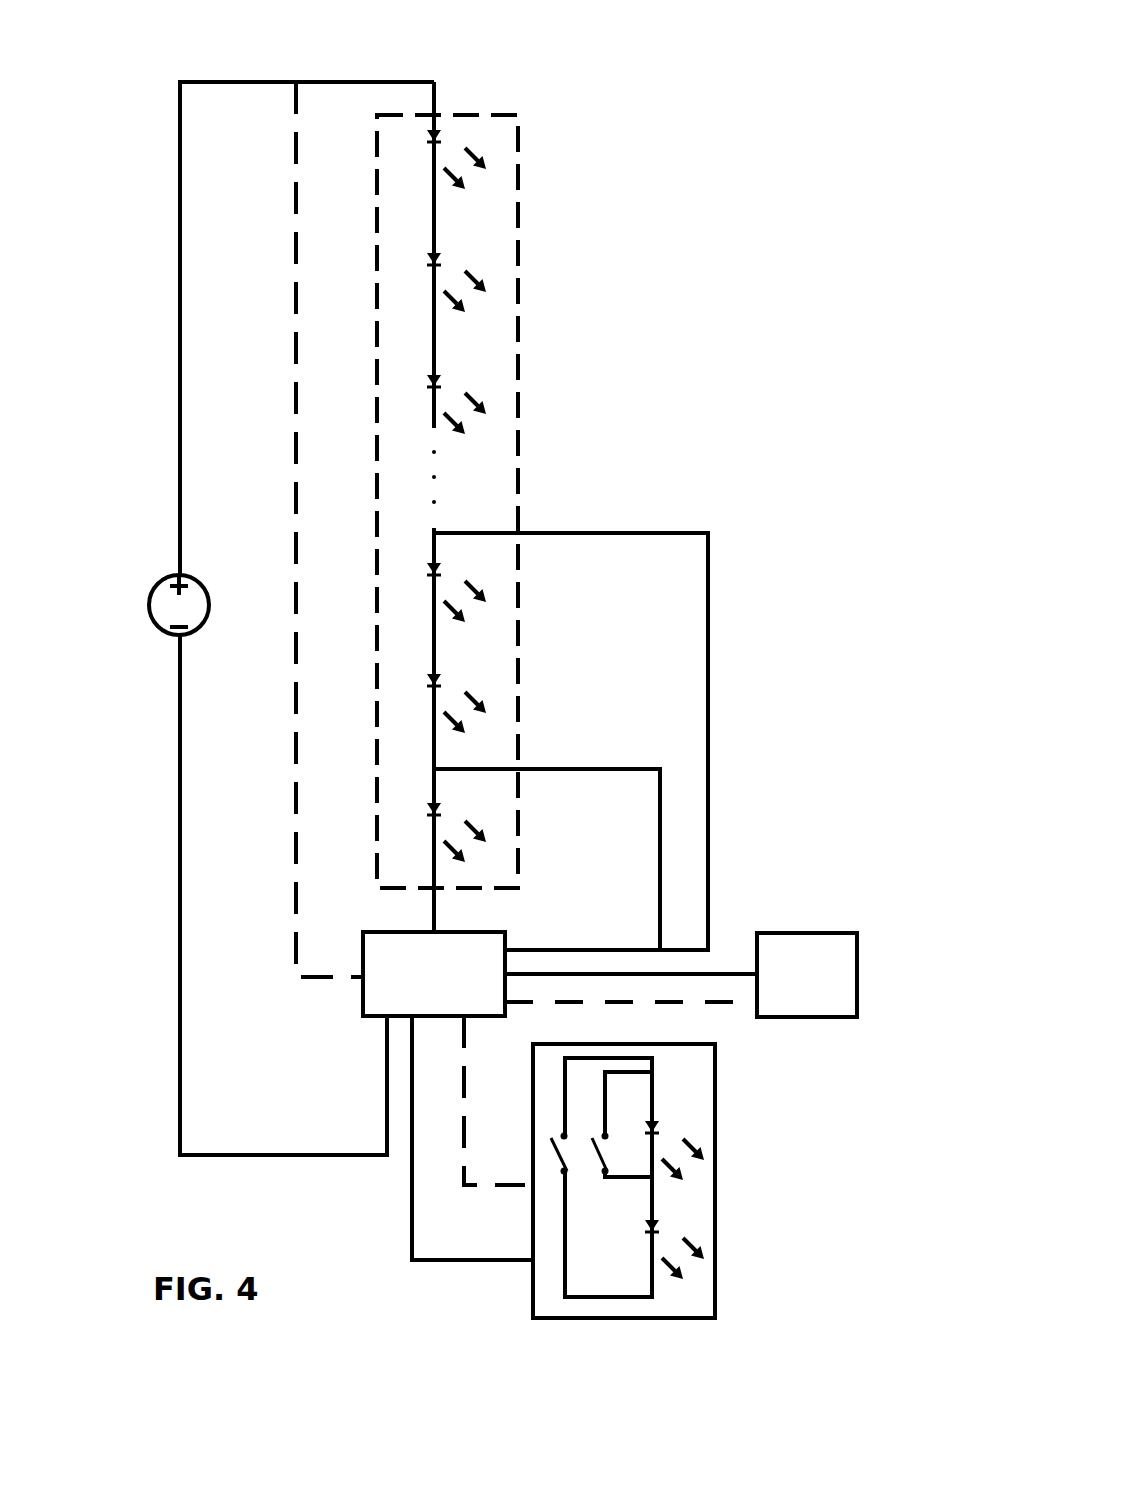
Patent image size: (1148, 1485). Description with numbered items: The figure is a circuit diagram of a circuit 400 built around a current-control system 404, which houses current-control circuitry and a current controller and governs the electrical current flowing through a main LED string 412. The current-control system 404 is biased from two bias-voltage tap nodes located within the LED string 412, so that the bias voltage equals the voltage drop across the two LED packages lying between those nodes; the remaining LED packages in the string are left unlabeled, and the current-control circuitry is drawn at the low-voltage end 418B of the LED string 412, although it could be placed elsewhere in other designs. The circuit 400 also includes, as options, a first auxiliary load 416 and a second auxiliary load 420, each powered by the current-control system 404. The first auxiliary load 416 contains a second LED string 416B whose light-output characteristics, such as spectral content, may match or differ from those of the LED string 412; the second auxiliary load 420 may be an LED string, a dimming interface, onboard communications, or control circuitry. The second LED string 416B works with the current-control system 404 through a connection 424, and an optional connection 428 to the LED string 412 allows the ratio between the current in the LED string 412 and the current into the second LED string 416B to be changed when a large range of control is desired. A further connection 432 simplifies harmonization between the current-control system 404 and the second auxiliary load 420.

The circuit 400 is at (716, 262).
The current-control system 404 is at (455, 987).
The LED string 412 is at (480, 111).
The first auxiliary load 416 is at (704, 1203).
The second LED string 416B is at (688, 1116).
The first light channel output 418B is at (411, 903).
The second auxiliary load 420 is at (828, 987).
The connection 424 is at (416, 1212).
The optional connection 428 is at (293, 178).
The connection 432 is at (717, 974).